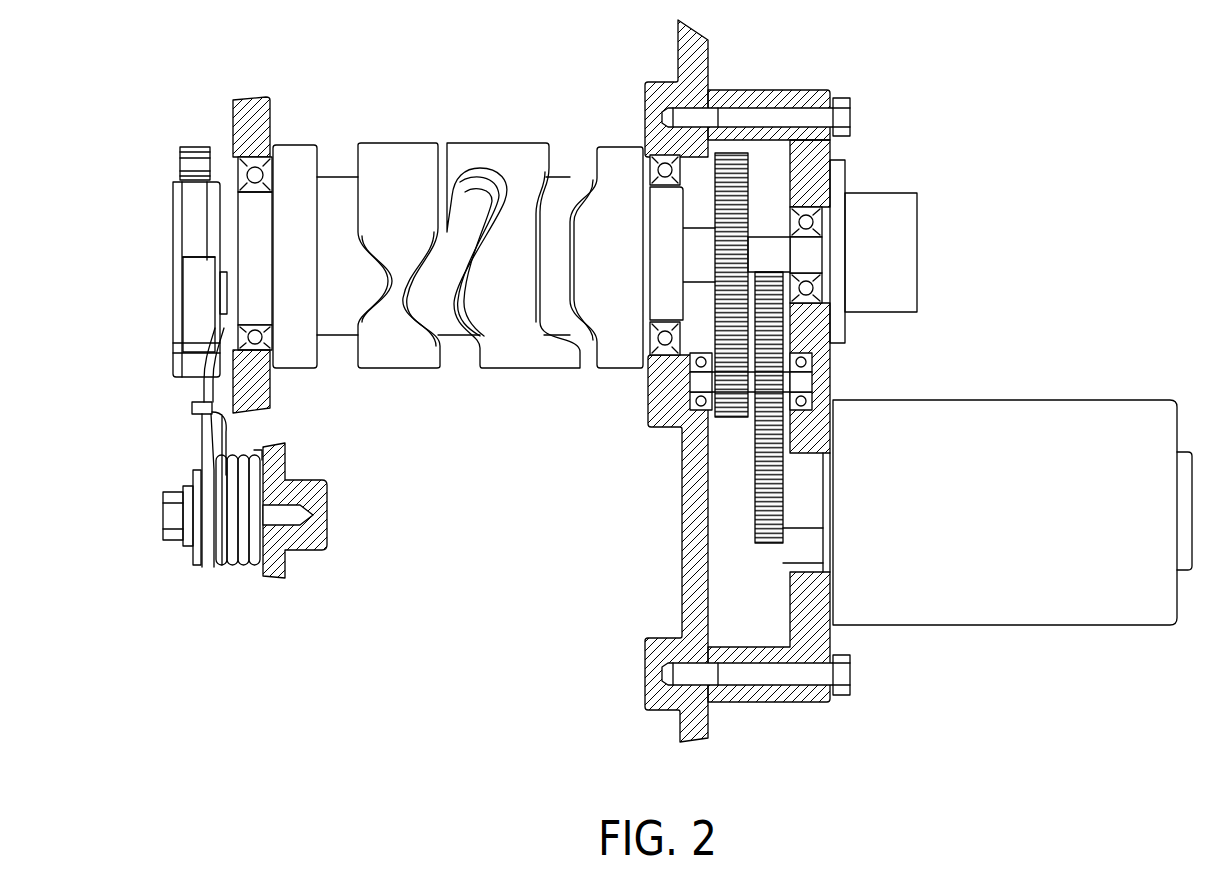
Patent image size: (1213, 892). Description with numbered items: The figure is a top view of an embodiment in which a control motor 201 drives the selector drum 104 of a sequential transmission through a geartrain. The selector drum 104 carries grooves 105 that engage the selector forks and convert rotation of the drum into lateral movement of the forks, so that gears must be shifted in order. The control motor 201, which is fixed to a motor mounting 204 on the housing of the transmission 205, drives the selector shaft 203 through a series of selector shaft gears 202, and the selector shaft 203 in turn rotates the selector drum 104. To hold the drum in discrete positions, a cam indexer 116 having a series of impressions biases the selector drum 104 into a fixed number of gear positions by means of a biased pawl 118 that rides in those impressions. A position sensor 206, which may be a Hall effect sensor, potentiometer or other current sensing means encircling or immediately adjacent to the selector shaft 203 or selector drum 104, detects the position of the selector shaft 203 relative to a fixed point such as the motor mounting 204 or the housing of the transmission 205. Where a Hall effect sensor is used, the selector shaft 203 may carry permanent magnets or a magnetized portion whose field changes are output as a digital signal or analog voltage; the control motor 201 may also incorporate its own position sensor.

The selector drum 104 is at (447, 143).
The grooves 105 is at (462, 340).
The cam indexer 116 is at (123, 457).
The biased pawl 118 is at (195, 381).
The control motor 201 is at (1019, 526).
The selector shaft gears 202 is at (734, 476).
The selector shaft 203 is at (686, 226).
The motor mounting 204 is at (812, 702).
The housing of the transmission 205 is at (713, 718).
The position sensor 206 is at (882, 193).